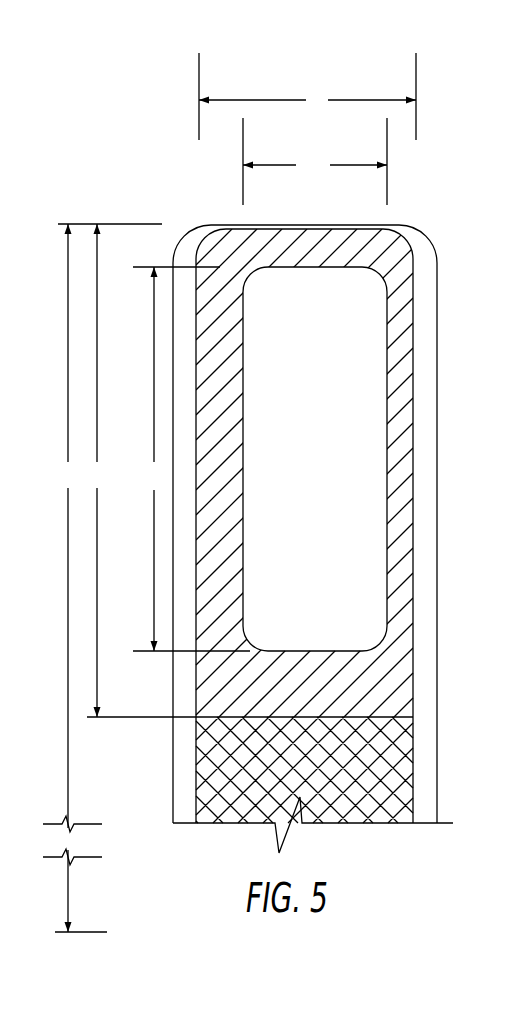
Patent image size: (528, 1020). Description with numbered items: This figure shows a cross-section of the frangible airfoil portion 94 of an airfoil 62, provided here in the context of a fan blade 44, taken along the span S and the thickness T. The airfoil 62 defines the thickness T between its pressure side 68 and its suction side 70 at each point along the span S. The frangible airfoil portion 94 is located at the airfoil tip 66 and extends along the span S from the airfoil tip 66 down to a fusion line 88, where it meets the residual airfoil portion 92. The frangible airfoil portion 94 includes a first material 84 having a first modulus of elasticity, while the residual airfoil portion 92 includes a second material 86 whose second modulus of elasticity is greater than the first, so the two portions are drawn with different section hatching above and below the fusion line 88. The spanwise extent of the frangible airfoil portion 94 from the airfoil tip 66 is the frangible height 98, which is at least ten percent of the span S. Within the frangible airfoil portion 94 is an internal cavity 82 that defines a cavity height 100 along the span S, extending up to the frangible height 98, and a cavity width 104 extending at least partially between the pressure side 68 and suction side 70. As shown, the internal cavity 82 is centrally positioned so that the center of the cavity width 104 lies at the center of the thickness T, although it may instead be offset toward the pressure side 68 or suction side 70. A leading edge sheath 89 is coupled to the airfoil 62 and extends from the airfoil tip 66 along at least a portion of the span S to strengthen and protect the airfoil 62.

The fan blade 44 is at (140, 109).
The airfoil 62 is at (462, 94).
The airfoil tip 66 is at (283, 225).
The pressure side 68 is at (196, 697).
The suction side 70 is at (413, 305).
The internal cavity 82 is at (300, 431).
The first material 84 is at (400, 580).
The second material 86 is at (411, 740).
The fusion line 88 is at (388, 715).
The leading edge sheath 89 is at (433, 247).
The residual airfoil portion 92 is at (469, 803).
The frangible airfoil portion 94 is at (466, 479).
The frangible height 98 is at (140, 470).
The cavity height 100 is at (191, 459).
The cavity width 104 is at (315, 161).
The thickness T is at (307, 96).
The span S is at (102, 578).